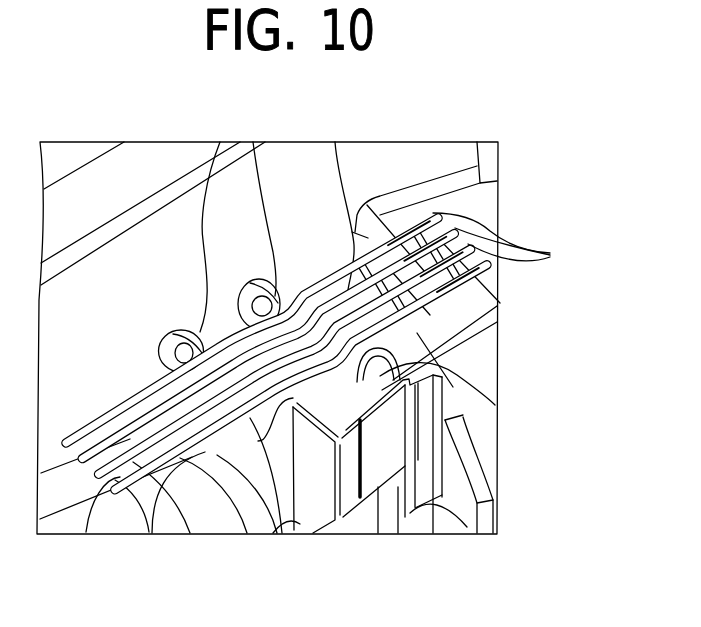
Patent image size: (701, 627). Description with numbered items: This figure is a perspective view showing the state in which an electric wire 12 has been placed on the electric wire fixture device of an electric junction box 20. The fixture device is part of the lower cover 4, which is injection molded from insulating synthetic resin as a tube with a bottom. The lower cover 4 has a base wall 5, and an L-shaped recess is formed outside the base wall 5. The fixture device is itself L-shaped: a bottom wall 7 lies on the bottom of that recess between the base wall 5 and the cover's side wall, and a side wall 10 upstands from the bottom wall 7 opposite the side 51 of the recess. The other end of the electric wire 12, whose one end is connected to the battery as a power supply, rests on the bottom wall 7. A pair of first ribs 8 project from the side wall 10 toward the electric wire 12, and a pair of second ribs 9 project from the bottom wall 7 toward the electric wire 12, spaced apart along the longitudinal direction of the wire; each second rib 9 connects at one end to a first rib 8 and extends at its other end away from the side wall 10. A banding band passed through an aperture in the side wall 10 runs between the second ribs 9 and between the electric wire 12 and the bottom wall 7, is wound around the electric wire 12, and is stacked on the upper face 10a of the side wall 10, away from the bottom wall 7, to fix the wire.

The lower cover 4 is at (504, 216).
The base wall 5 is at (168, 165).
The bottom wall 7 is at (203, 452).
The first ribs 8 is at (447, 312).
The second ribs 9 is at (216, 175).
The side wall 10 is at (392, 435).
The upper face 10a is at (448, 362).
The electric wire 12 is at (507, 253).
The electric junction box 20 is at (541, 220).
The side 51 is at (312, 178).